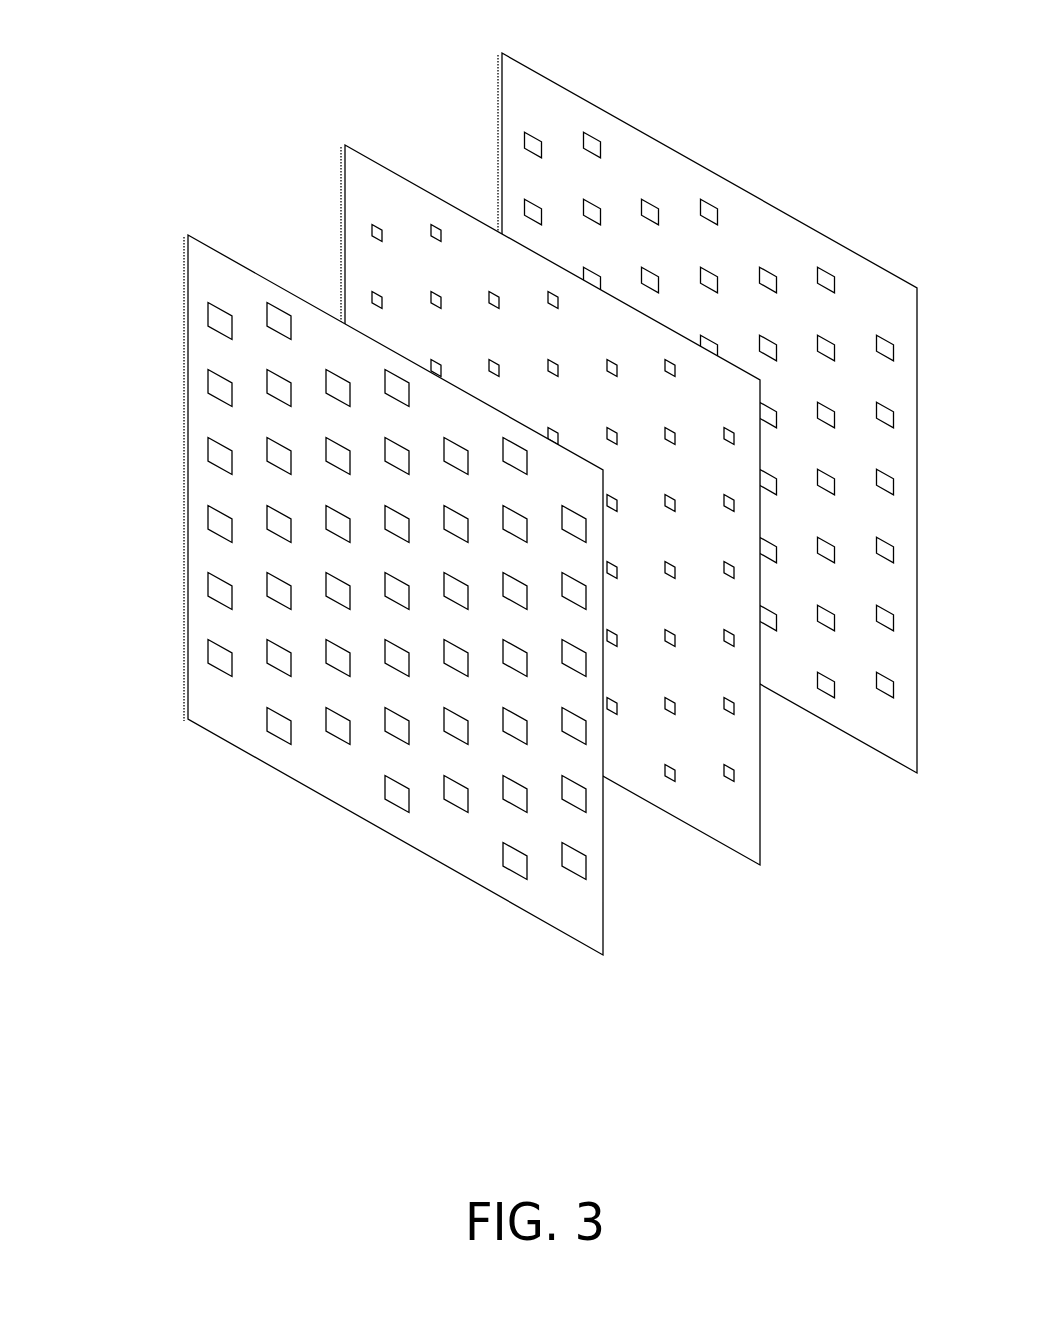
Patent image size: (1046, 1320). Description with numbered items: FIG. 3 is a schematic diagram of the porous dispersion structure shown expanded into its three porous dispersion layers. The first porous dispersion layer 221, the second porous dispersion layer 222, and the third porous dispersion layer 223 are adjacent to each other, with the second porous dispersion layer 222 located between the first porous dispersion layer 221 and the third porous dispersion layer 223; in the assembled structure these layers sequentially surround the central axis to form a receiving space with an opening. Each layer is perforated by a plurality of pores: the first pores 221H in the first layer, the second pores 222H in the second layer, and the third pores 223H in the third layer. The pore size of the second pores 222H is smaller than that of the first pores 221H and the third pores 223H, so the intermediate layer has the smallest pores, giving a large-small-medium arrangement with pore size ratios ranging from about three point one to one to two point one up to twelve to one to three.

The first porous dispersion layer 221 is at (344, 568).
The first pores 221H is at (334, 591).
The second porous dispersion layer 222 is at (501, 476).
The second pores 222H is at (488, 500).
The third porous dispersion layer 223 is at (658, 387).
The third pores 223H is at (644, 414).